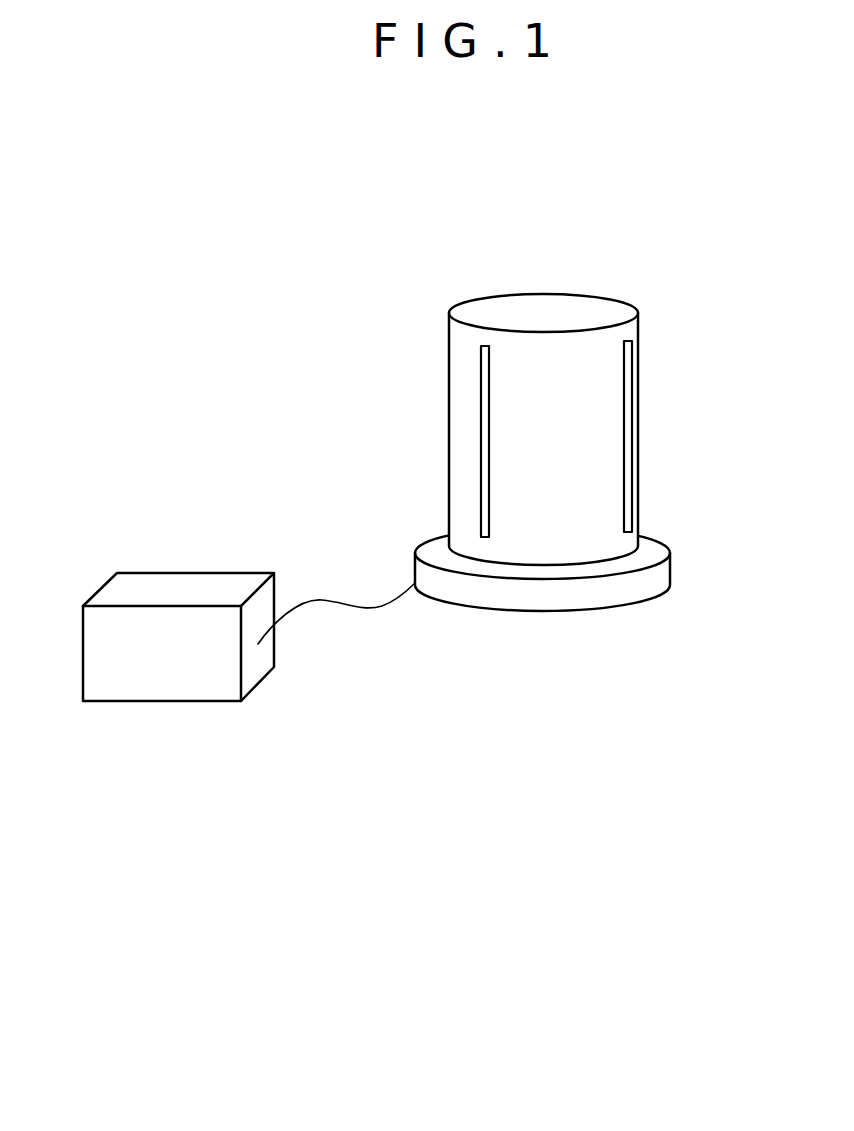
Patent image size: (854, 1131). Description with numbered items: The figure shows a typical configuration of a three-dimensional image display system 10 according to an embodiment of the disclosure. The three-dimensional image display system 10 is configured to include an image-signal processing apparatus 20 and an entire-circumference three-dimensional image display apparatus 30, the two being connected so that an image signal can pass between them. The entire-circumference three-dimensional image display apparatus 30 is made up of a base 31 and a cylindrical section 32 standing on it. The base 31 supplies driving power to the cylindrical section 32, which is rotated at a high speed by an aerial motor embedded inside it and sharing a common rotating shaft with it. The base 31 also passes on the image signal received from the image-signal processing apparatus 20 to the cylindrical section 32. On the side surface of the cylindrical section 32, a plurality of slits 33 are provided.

The 3-dimensional image display system 10 is at (417, 573).
The image-signal processing apparatus 20 is at (162, 702).
The entire-circumference 3-dimensional image display apparatus 30 is at (556, 444).
The base 31 is at (672, 565).
The cylindrical section 32 is at (532, 294).
The slits 33 is at (481, 447).